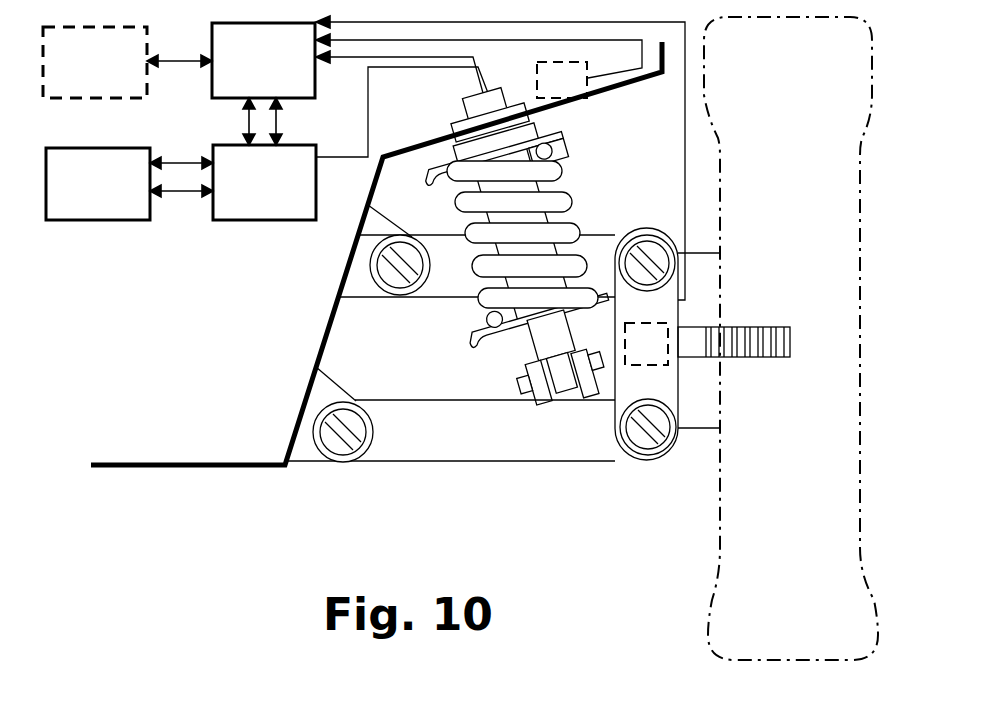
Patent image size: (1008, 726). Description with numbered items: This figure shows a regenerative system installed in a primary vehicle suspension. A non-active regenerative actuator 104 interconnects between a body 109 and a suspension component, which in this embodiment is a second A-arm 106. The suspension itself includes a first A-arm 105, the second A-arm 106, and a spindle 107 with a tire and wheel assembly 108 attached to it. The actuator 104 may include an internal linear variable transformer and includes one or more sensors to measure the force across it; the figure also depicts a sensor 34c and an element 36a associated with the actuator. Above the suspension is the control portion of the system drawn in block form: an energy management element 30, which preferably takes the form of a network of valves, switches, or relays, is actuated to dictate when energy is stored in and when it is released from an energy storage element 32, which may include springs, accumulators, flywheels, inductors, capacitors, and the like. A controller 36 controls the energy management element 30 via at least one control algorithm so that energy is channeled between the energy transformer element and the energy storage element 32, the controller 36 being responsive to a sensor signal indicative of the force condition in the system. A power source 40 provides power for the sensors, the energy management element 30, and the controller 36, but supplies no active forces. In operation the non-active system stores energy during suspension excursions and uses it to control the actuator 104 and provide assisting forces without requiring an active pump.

The power source 40 is at (108, 72).
The controller 36 is at (275, 70).
The energy storage element 32 is at (109, 195).
The energy management element 30 is at (276, 193).
The sensor 36a is at (580, 96).
The sensor 34c is at (663, 358).
The non-active regenerative actuator 104 is at (555, 165).
The first A-arm 105 is at (434, 297).
The second A-arm 106 is at (478, 462).
The spindle 107 is at (737, 327).
The tire and wheel assembly 108 is at (723, 443).
The body 109 is at (325, 325).